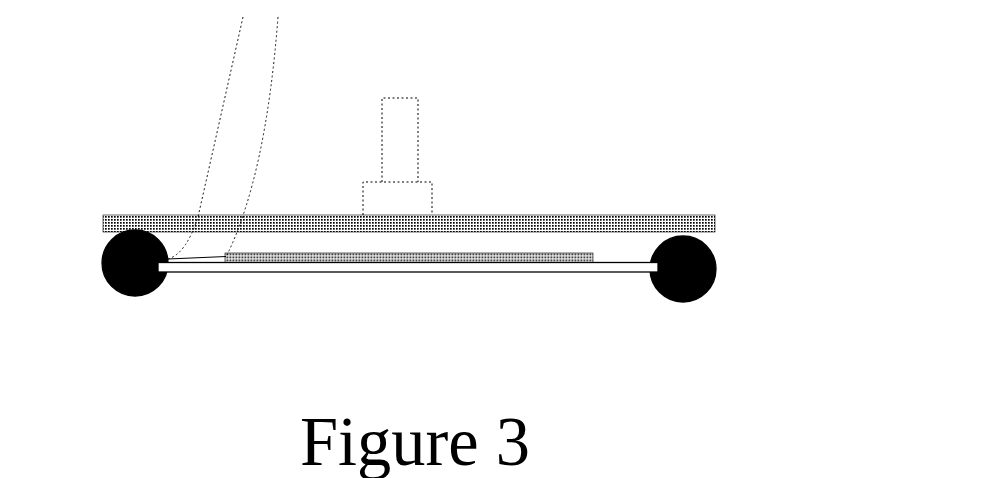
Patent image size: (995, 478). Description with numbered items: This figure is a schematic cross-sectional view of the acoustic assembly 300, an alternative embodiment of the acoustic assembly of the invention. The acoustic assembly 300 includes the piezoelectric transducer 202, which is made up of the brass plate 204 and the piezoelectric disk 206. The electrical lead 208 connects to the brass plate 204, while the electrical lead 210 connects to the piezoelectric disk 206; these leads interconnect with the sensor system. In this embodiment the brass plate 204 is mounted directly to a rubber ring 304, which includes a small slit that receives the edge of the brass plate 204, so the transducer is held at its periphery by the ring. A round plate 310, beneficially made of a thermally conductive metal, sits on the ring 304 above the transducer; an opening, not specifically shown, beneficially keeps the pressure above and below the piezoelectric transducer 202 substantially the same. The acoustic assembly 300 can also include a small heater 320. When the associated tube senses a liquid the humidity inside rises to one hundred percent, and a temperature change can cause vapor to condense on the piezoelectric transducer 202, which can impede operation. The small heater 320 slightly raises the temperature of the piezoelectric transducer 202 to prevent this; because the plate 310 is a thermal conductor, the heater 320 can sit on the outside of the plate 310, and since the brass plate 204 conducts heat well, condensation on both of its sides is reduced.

The acoustic assembly 300 is at (579, 131).
The piezoelectric transducer 202 is at (609, 244).
The brass plate 204 is at (190, 273).
The piezoelectric disk 206 is at (535, 257).
The electrical lead 208 is at (232, 78).
The electrical lead 210 is at (275, 80).
The rubber ring 304 is at (135, 298).
The round plate 310 is at (172, 213).
The small heater 320 is at (363, 197).